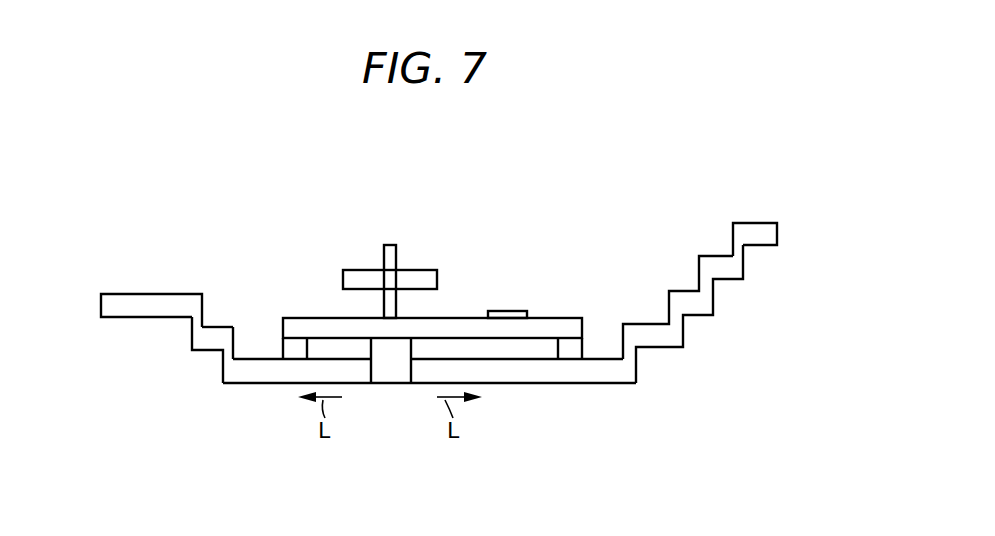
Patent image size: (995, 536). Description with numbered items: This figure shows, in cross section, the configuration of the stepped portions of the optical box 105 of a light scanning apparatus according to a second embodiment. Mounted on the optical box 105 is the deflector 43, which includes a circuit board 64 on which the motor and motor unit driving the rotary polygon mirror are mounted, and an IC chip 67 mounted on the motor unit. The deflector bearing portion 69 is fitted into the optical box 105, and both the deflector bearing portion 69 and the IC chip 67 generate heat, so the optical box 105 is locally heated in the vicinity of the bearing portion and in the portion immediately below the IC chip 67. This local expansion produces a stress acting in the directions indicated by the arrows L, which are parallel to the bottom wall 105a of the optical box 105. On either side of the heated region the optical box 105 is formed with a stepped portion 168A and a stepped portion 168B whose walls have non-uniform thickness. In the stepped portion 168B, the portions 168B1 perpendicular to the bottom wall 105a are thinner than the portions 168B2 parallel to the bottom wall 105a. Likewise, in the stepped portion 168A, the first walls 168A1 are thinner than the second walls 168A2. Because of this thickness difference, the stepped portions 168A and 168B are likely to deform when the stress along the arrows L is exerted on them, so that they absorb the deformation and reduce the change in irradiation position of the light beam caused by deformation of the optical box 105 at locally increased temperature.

The deflector 43 is at (395, 228).
The circuit board 64 is at (452, 328).
The IC chip 67 is at (506, 311).
The deflector bearing portion 69 is at (390, 383).
The optical box 105 is at (265, 410).
The bottom wall 105a is at (537, 383).
The stepped portion 168A is at (137, 274).
The first walls 168A1 is at (185, 326).
The second walls 168A2 is at (222, 327).
The stepped portion 168B is at (777, 208).
The portions perpendicular to the bottom wall 168B1 is at (741, 261).
The portions parallel to the bottom wall 168B2 is at (762, 222).